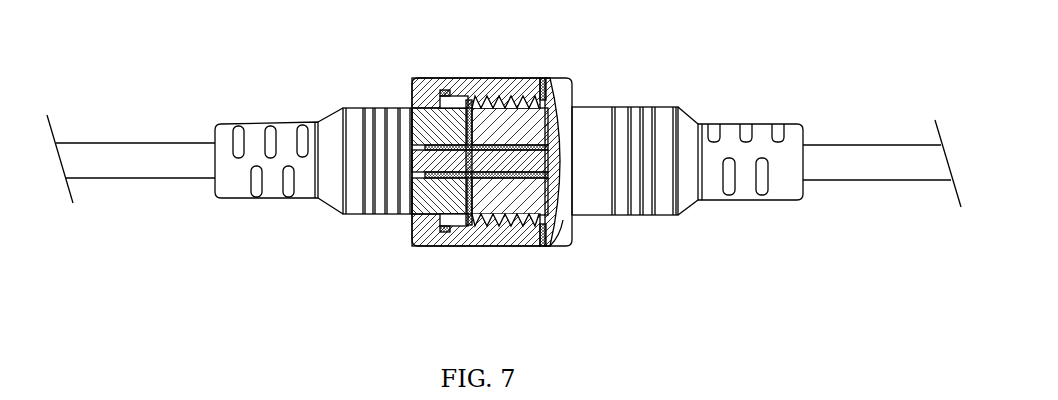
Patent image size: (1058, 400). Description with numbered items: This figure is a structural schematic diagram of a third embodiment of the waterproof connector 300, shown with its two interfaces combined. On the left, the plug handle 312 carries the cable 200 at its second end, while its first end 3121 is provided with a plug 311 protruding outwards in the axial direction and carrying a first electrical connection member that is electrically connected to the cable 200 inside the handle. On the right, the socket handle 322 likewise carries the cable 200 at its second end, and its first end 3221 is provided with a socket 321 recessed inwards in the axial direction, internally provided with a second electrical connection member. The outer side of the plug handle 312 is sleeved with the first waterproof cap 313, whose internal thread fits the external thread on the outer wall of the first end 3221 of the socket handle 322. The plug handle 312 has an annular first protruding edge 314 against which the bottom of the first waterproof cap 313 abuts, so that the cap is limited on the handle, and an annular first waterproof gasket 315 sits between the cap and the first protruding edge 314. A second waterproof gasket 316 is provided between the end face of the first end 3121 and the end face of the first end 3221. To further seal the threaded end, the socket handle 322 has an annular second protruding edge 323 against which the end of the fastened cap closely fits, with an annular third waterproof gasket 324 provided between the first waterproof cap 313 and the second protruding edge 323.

The cable 200 is at (148, 143).
The connector 300 is at (427, 304).
The plug 311 is at (557, 224).
The plug handle 312 is at (343, 108).
The first end of the plug handle 3121 is at (413, 233).
The first waterproof cap 313 is at (493, 248).
The first protruding edge 314 is at (461, 98).
The first waterproof gasket 315 is at (441, 78).
The second waterproof gasket 316 is at (458, 228).
The socket 321 is at (576, 107).
The socket handle 322 is at (733, 124).
The first end of the socket handle 3221 is at (505, 100).
The second protruding edge 323 is at (557, 248).
The third waterproof gasket 324 is at (540, 248).